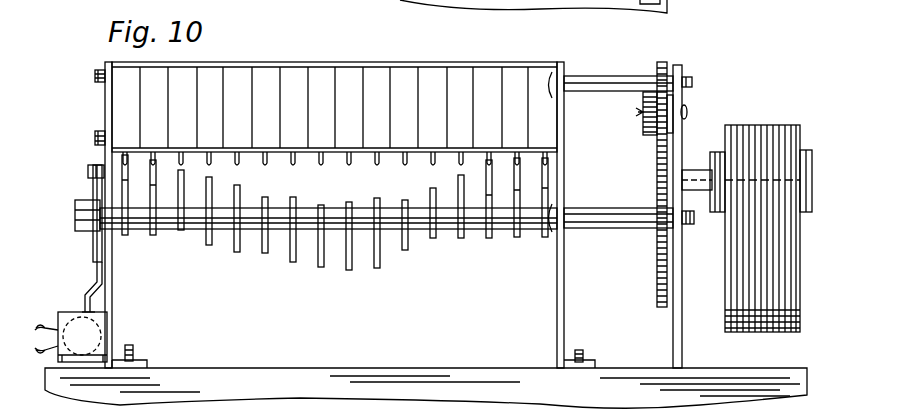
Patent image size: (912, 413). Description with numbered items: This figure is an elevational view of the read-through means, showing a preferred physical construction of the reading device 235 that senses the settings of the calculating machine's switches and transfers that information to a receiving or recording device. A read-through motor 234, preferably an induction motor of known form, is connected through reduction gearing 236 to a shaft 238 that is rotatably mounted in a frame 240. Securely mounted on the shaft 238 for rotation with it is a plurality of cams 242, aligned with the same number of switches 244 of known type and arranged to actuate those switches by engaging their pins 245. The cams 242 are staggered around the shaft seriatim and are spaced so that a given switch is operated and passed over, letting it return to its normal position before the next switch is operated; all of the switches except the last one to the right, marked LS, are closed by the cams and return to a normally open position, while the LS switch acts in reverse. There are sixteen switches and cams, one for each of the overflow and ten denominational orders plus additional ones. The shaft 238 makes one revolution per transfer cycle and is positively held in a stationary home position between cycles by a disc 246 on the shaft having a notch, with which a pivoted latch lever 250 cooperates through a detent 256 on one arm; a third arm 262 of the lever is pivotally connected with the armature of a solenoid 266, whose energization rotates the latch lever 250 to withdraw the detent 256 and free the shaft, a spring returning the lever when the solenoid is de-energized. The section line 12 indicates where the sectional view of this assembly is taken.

The section line 12- 12 is at (178, 52).
The read-through motor 234 is at (745, 125).
The reading device 235 is at (75, 49).
The reduction gearing 236 is at (636, 155).
The shaft 238 is at (478, 229).
The frame 240 is at (557, 323).
The cams 242 is at (209, 245).
The switches 244 is at (322, 72).
The pins 245 is at (377, 166).
The disc 246 is at (93, 191).
The latch lever 250 is at (90, 262).
The detent 256 is at (88, 171).
The third arm 262 is at (82, 310).
The solenoid 266 is at (70, 332).